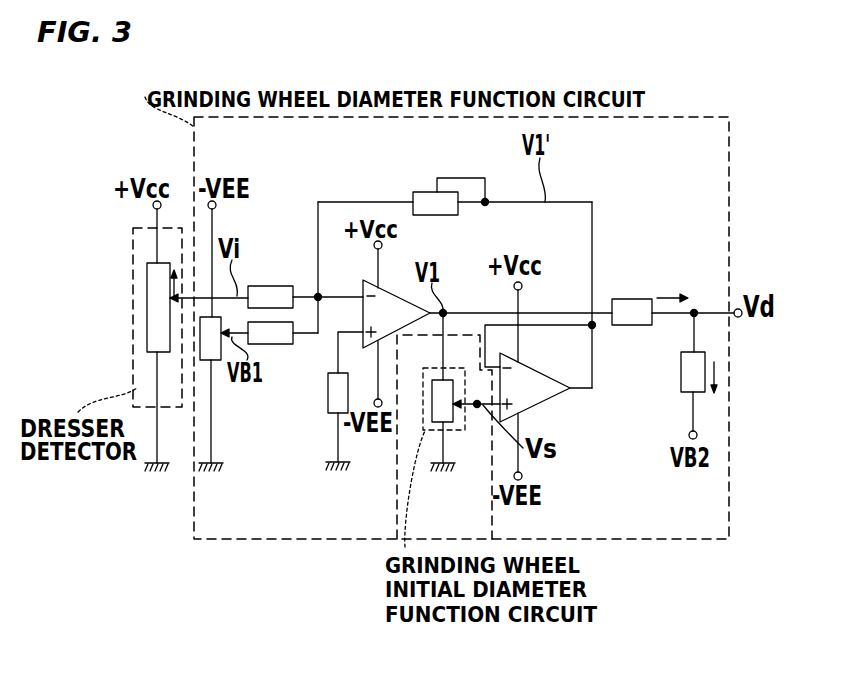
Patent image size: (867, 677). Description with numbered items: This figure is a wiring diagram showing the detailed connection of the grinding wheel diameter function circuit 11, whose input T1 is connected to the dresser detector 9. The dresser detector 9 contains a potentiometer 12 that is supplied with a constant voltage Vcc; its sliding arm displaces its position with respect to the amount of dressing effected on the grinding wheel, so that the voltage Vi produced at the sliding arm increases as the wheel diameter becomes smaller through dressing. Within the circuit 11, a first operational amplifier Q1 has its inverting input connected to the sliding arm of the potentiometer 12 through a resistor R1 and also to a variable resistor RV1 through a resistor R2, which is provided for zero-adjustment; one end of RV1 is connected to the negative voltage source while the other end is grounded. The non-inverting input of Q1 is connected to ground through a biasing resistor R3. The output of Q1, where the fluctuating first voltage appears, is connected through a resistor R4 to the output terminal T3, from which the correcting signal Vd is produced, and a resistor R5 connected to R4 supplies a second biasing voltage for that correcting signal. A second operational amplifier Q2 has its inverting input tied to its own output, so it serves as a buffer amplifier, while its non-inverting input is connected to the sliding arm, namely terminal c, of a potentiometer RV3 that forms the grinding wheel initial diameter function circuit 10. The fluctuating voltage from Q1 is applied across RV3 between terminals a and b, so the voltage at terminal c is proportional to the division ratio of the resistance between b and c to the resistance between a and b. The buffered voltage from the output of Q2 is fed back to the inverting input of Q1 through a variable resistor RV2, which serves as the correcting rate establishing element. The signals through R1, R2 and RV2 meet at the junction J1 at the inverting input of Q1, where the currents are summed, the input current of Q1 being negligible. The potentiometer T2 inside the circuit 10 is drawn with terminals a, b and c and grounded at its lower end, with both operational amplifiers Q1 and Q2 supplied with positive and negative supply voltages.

The dresser detector 9 is at (133, 367).
The grinding wheel initial diameter function circuit 10 is at (433, 431).
The grinding wheel diameter function circuit 11 is at (731, 443).
The potentiometer 12 is at (147, 302).
The input T1 is at (190, 298).
The potentiometer T2 is at (477, 408).
The output terminal T3 is at (740, 317).
The resistor R1 is at (278, 286).
The resistor R2 is at (285, 344).
The biasing resistor R3 is at (328, 397).
The resistor R4 is at (633, 299).
The resistor R5 is at (681, 362).
The variable resistor RV1 is at (217, 363).
The variable resistor RV2 is at (423, 192).
The potentiometer RV3 is at (431, 404).
The first operational amplifier Q1 is at (396, 324).
The second operational amplifier Q2 is at (540, 341).
The junction J1 is at (320, 294).
The terminal a is at (441, 370).
The terminal b is at (427, 429).
The terminal c is at (456, 404).